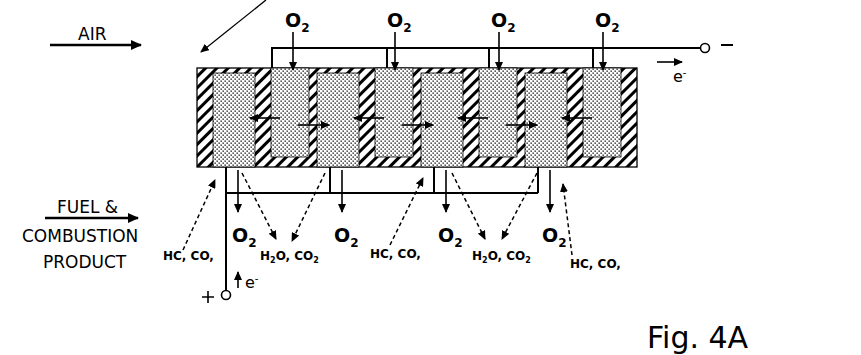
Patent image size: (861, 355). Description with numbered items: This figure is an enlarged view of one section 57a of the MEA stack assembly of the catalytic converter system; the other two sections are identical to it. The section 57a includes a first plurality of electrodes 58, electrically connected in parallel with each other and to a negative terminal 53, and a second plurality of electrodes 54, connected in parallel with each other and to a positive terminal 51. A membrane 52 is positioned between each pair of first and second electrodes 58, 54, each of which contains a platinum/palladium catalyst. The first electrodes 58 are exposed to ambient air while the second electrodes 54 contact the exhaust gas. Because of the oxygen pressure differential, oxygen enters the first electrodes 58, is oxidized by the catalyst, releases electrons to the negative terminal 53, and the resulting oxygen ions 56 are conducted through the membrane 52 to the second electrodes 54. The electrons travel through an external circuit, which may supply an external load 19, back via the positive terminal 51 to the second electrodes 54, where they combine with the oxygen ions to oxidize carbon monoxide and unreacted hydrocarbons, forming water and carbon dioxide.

The external load 19 is at (610, 0).
The positive terminal 51 is at (229, 299).
The membrane 52 is at (197, 106).
The negative terminal 53 is at (709, 51).
The second plurality of electrodes 54 is at (390, 120).
The oxygen ions 56 is at (584, 118).
The section 57a is at (158, 127).
The first plurality of electrodes 58 is at (446, 112).